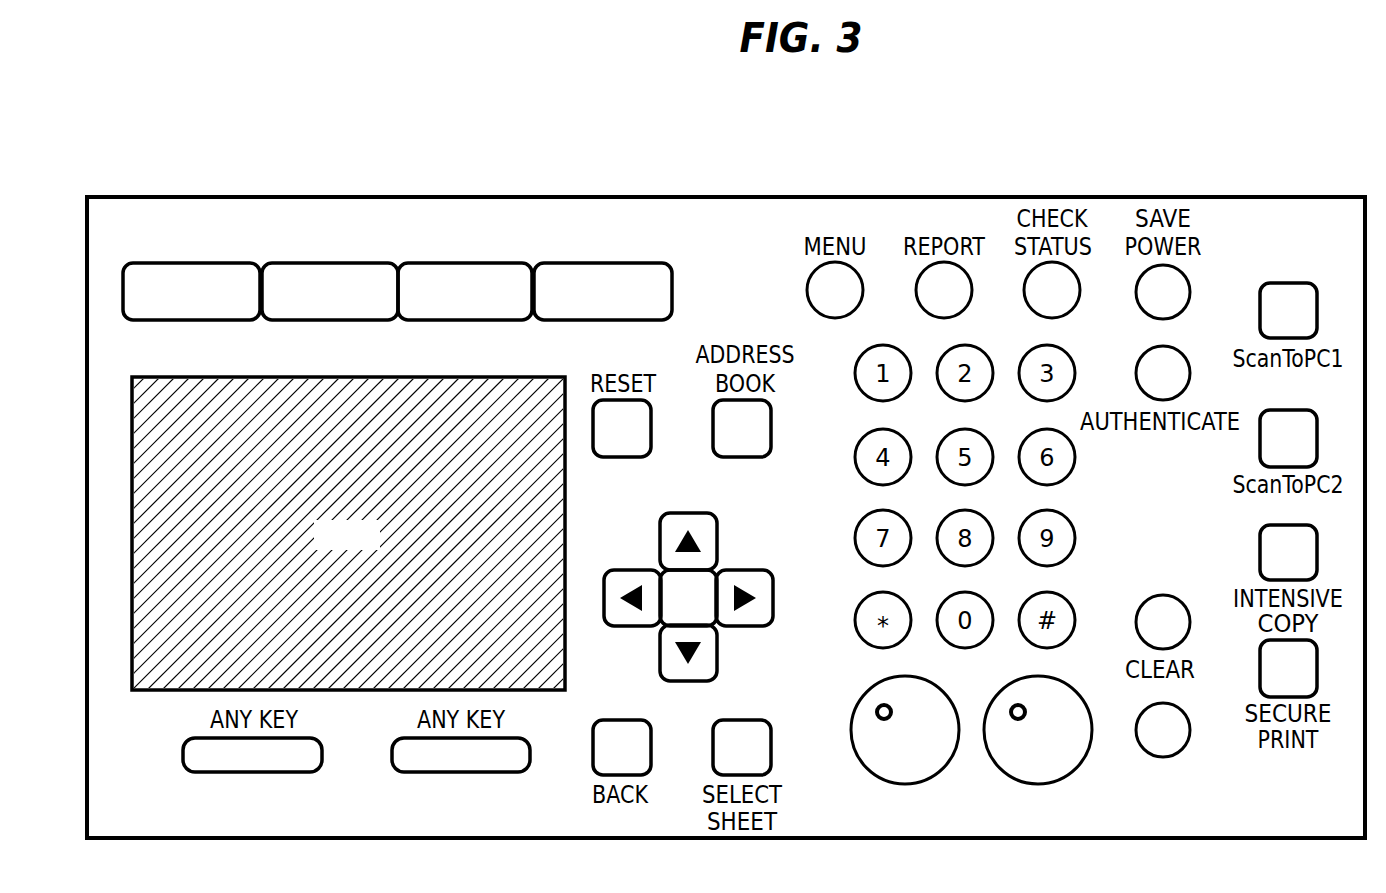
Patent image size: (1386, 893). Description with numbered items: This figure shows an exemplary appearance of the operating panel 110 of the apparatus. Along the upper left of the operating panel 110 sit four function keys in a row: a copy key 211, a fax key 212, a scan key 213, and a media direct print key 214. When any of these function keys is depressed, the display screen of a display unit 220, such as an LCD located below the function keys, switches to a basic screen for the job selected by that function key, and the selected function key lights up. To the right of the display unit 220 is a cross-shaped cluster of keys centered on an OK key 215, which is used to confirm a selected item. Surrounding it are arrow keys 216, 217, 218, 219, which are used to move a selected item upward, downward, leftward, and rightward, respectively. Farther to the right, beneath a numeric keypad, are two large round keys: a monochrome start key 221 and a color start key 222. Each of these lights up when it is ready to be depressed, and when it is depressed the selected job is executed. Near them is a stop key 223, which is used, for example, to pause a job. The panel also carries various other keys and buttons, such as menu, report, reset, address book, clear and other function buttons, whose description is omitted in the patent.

The operating panel 110 is at (727, 196).
The copy key 211 is at (207, 262).
The fax key 212 is at (330, 262).
The scan key 213 is at (468, 262).
The media direct print key 214 is at (606, 262).
The OK key 215 is at (700, 585).
The arrow key 216 is at (691, 512).
The arrow key 217 is at (706, 659).
The arrow key 218 is at (634, 569).
The arrow key 219 is at (763, 604).
The display unit 220 is at (351, 376).
The monochrome start key 221 is at (878, 740).
The color start key 222 is at (1062, 757).
The stop key 223 is at (1190, 717).